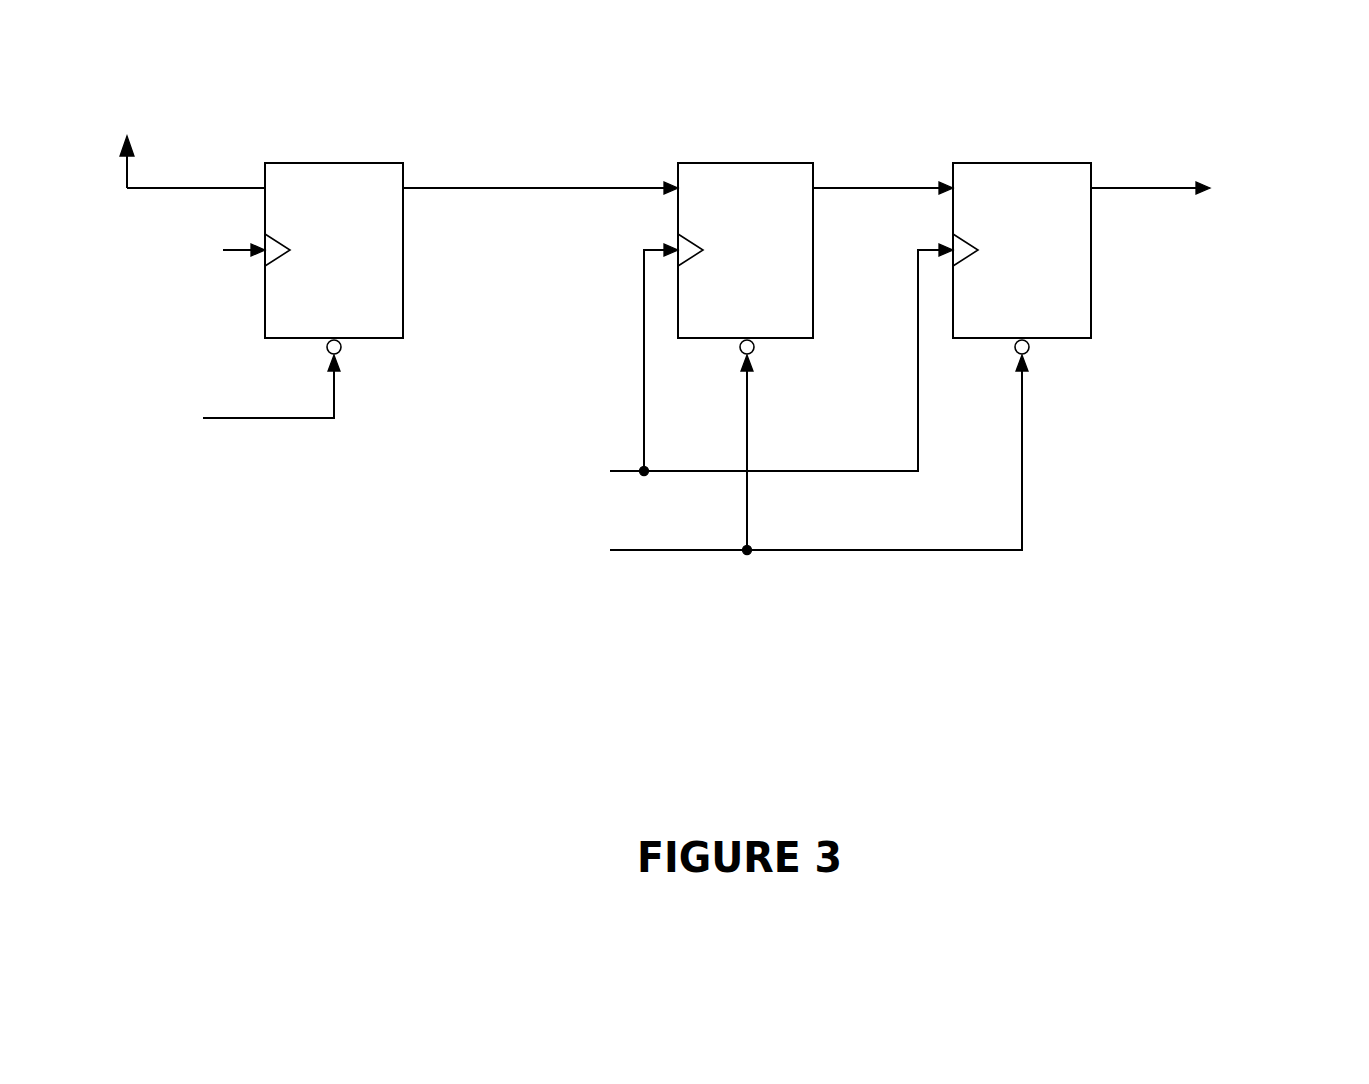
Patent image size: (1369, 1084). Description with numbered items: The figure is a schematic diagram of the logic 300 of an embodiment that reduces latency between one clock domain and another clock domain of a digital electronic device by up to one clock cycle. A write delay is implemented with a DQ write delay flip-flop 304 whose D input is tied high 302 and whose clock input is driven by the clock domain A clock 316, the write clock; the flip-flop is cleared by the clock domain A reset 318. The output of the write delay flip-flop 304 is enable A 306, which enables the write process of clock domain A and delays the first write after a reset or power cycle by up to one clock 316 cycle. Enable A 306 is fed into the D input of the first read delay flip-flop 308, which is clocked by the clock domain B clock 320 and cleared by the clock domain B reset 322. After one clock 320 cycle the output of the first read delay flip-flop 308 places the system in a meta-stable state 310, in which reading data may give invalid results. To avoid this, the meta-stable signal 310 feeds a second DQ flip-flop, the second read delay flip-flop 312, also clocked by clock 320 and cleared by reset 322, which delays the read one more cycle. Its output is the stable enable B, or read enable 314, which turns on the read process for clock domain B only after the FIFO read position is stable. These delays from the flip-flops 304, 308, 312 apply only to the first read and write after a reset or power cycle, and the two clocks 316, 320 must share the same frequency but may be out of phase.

The logic 300 is at (90, 655).
The tied high input 302 is at (136, 70).
The write delay flip-flop 304 is at (328, 160).
The enable A 306 is at (547, 185).
The read delay 1 flip-flop 308 is at (731, 160).
The meta-stable state 310 is at (888, 185).
The read delay 2 flip-flop 312 is at (1040, 160).
The read enable 314 is at (1283, 175).
The clock A 316 is at (135, 265).
The reset A 318 is at (136, 437).
The clock B 320 is at (540, 452).
The reset B 322 is at (548, 570).